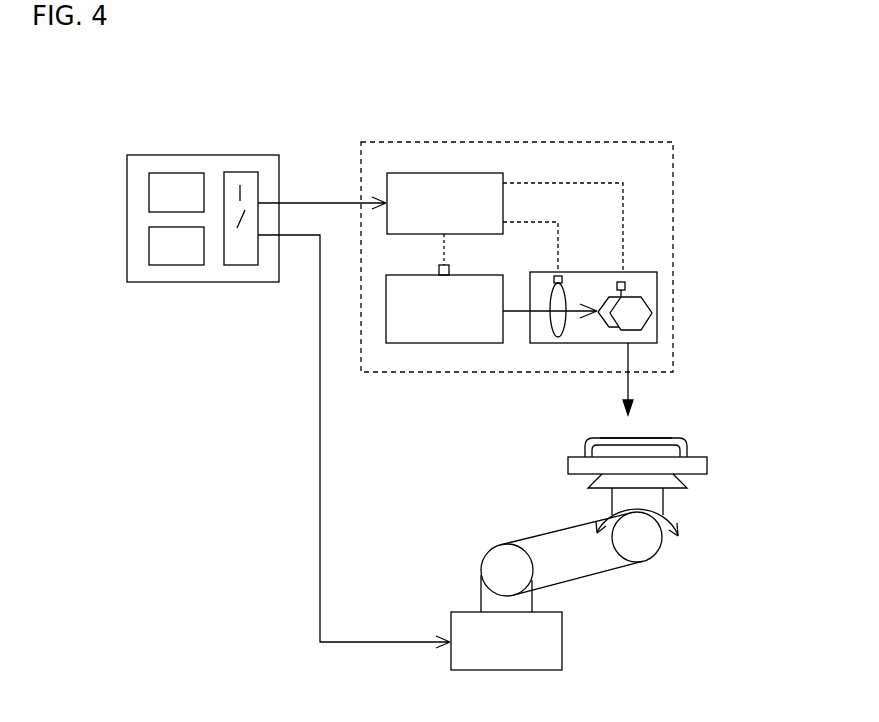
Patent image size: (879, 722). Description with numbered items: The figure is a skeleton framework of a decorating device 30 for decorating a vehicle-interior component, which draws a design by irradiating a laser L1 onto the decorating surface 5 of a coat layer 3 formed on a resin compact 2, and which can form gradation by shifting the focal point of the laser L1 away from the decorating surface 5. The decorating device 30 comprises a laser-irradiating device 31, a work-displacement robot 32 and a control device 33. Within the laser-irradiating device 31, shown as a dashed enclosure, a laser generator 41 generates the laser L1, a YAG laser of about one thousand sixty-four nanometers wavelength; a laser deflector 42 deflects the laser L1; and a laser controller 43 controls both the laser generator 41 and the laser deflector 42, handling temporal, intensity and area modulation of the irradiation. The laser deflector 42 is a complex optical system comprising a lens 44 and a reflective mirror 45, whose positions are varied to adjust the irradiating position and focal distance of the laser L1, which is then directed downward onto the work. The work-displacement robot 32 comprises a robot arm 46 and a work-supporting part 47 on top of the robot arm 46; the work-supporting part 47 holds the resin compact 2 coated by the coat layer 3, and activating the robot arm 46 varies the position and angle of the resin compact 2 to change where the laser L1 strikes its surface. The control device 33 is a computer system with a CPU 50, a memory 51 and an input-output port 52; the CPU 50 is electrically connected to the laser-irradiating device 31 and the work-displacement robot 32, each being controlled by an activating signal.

The decorating device 30 is at (729, 96).
The laser-irradiating device 31 is at (628, 140).
The work-displacement robot 32 is at (569, 572).
The control device 33 is at (248, 155).
The laser generator 41 is at (444, 343).
The laser deflector 42 is at (590, 272).
The laser controller 43 is at (441, 173).
The lens 44 is at (556, 325).
The reflective mirror 45 is at (635, 307).
The robot arm 46 is at (548, 542).
The work-supporting part 47 is at (707, 465).
The CPU 50 is at (176, 173).
The memory 51 is at (175, 265).
The input-output port 52 is at (240, 265).
The resin compact 2 is at (586, 446).
The coat layer 3 is at (686, 446).
The decorating surface 5 is at (638, 438).
The laser L1 is at (628, 380).